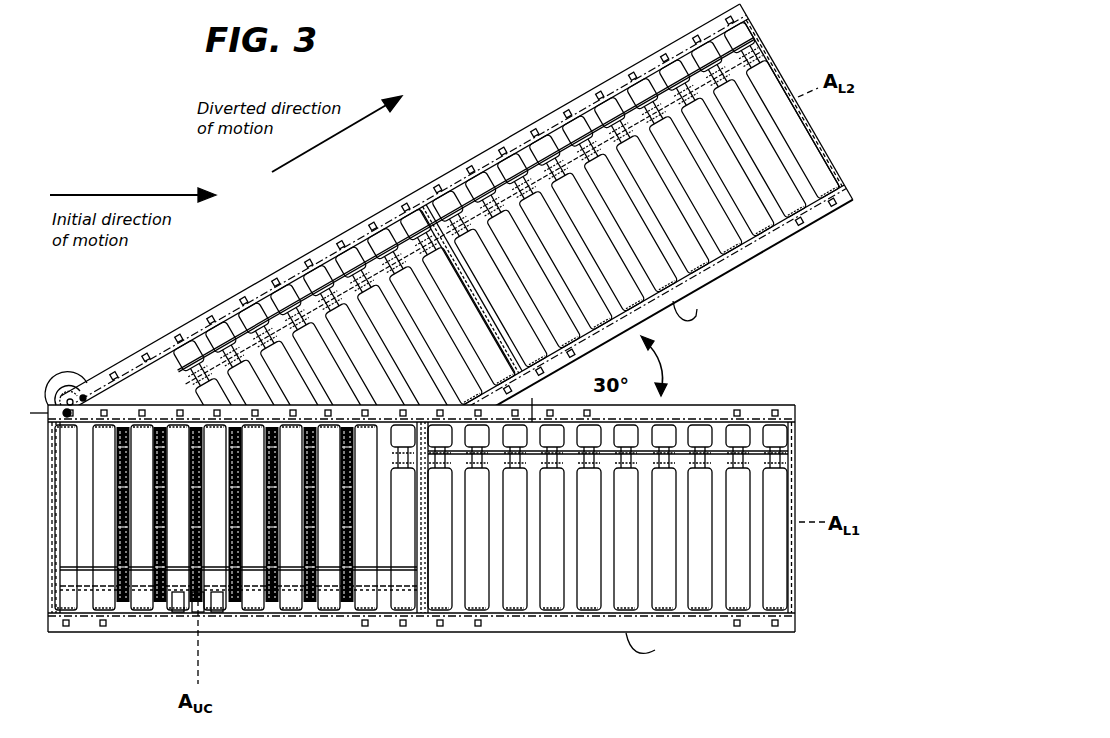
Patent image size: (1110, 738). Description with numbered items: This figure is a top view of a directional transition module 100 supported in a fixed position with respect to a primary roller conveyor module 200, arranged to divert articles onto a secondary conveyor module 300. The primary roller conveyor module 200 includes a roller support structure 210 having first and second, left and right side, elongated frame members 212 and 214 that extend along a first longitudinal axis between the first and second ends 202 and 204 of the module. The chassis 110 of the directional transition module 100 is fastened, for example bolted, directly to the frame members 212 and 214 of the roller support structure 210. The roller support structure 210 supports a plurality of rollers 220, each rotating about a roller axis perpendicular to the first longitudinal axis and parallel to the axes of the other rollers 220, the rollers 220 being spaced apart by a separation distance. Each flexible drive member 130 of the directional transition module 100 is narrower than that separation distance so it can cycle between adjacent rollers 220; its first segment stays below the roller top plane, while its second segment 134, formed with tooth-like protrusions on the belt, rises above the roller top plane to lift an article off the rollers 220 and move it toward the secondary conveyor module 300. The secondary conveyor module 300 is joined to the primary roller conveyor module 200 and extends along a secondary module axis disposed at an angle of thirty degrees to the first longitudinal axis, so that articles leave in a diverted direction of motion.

The directional transition module 100 is at (117, 407).
The chassis 110 is at (279, 637).
The flexible drive member 130 is at (268, 482).
The second segment 134 is at (286, 478).
The primary roller conveyor module 200 is at (705, 623).
The first end 202 is at (47, 592).
The second end 204 is at (795, 598).
The roller support structure 210 is at (427, 625).
The first elongated frame member 212 is at (162, 412).
The second elongated frame member 214 is at (135, 623).
The rollers 220 is at (552, 578).
The secondary conveyor module 300 is at (473, 172).